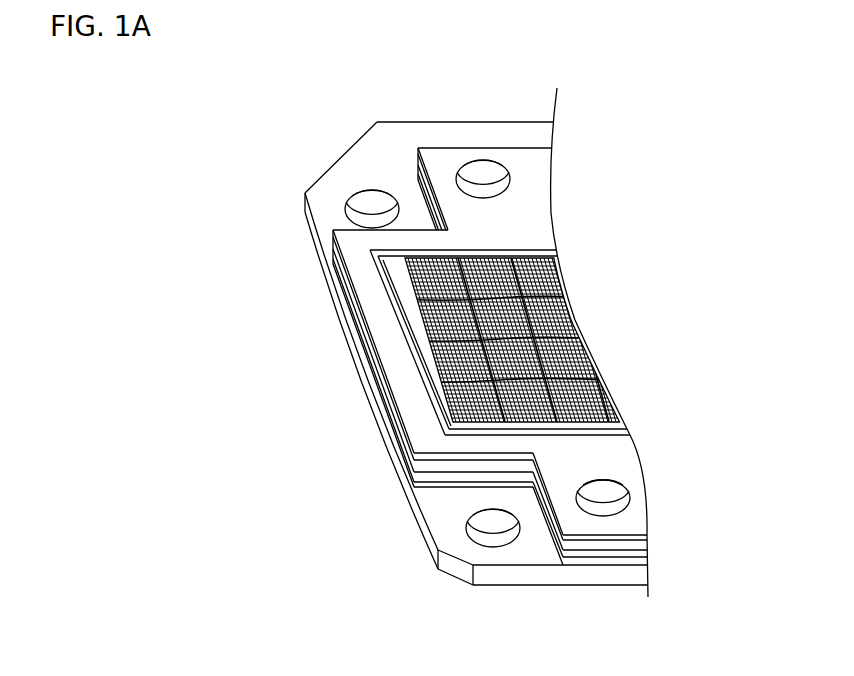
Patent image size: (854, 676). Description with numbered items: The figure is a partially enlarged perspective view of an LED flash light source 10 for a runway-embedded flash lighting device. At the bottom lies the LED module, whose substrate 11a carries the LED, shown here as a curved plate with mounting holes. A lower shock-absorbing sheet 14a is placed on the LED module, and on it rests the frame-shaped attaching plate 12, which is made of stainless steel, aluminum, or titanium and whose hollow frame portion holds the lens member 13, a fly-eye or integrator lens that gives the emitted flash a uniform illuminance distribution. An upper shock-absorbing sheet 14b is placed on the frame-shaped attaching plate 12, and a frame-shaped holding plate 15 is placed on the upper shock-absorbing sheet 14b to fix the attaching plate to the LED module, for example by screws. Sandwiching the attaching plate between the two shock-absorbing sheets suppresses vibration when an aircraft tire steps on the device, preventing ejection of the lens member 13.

The LED flash light source 10 is at (497, 46).
The substrate 11a is at (543, 555).
The frame-shaped attaching plate 12 is at (373, 397).
The lens member 13 is at (400, 290).
The lower shock-absorbing sheet 14a is at (382, 417).
The upper shock-absorbing sheet 14b is at (365, 375).
The frame-shaped holding plate 15 is at (358, 352).